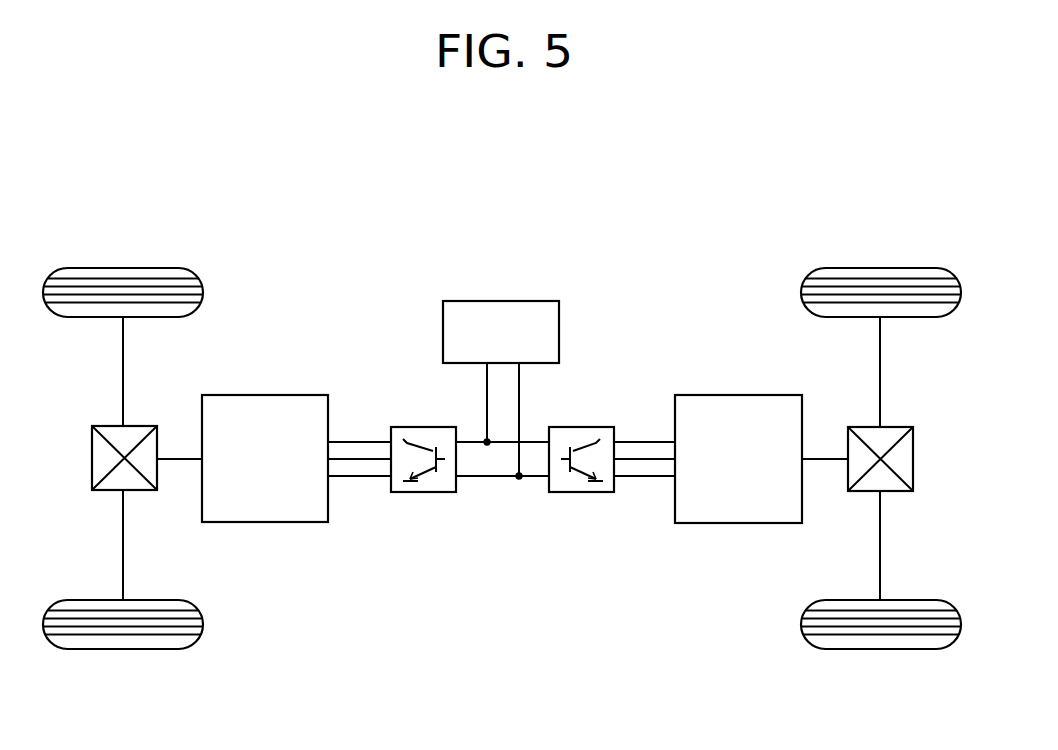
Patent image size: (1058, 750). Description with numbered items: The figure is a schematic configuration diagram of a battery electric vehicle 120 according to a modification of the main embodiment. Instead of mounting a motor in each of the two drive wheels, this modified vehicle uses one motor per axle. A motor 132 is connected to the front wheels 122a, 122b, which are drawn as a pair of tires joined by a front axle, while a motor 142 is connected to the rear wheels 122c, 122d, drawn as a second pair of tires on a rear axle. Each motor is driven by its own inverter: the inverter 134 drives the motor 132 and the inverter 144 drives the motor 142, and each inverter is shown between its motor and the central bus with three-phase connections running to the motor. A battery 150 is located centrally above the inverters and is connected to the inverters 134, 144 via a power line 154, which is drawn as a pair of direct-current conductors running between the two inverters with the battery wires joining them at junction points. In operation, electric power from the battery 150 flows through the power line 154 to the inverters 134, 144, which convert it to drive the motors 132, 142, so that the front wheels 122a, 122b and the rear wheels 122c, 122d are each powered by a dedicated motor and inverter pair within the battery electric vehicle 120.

The battery electric vehicle 120 is at (603, 238).
The front wheel 122a is at (879, 267).
The front wheel 122b is at (880, 650).
The rear wheel 122c is at (123, 267).
The rear wheel 122d is at (123, 650).
The motor 132 is at (739, 394).
The inverter 134 is at (582, 425).
The motor 142 is at (264, 394).
The inverter 144 is at (423, 426).
The battery 150 is at (502, 300).
The power line 154 is at (472, 444).